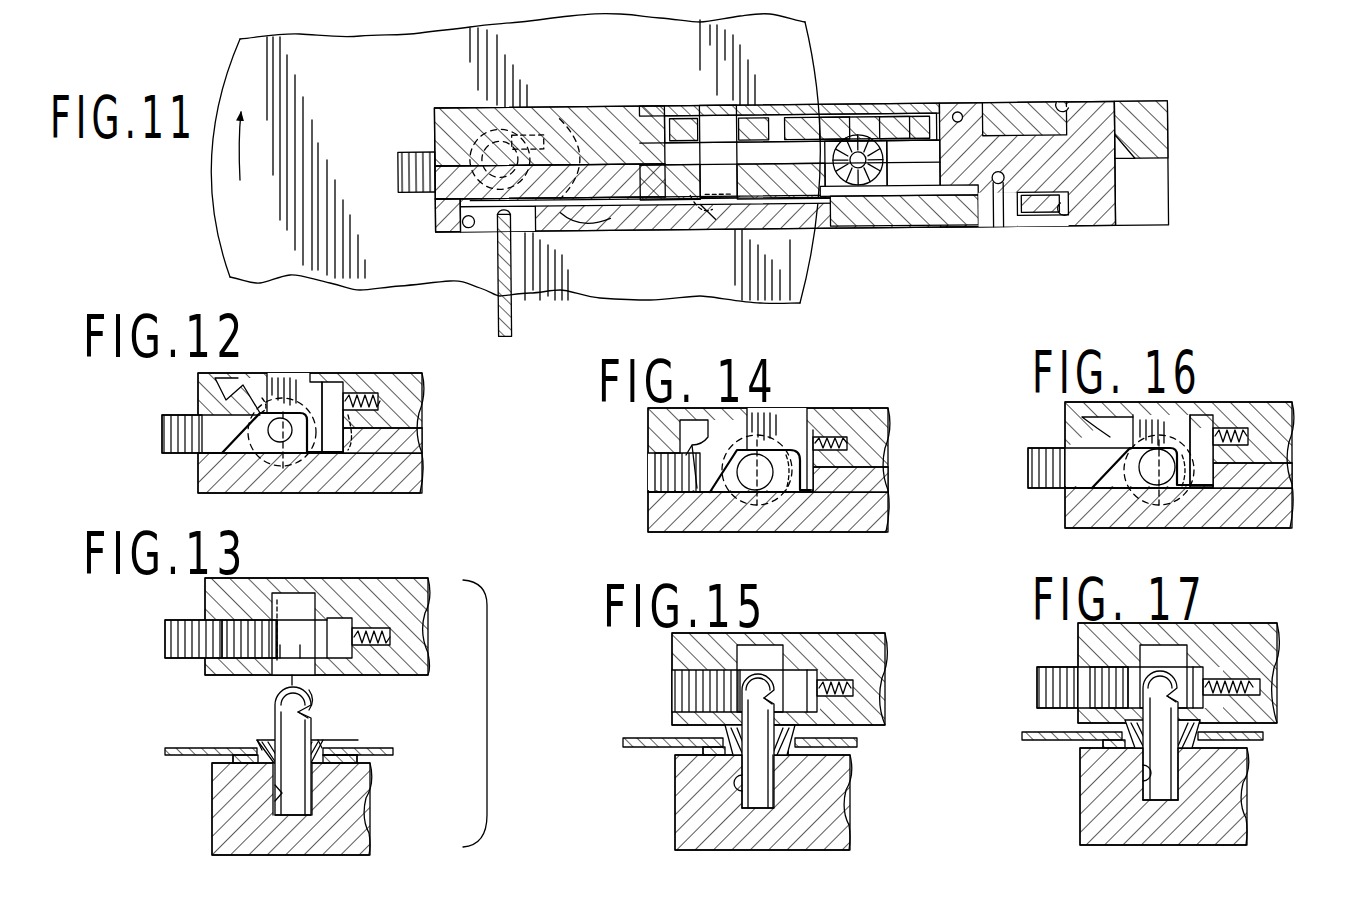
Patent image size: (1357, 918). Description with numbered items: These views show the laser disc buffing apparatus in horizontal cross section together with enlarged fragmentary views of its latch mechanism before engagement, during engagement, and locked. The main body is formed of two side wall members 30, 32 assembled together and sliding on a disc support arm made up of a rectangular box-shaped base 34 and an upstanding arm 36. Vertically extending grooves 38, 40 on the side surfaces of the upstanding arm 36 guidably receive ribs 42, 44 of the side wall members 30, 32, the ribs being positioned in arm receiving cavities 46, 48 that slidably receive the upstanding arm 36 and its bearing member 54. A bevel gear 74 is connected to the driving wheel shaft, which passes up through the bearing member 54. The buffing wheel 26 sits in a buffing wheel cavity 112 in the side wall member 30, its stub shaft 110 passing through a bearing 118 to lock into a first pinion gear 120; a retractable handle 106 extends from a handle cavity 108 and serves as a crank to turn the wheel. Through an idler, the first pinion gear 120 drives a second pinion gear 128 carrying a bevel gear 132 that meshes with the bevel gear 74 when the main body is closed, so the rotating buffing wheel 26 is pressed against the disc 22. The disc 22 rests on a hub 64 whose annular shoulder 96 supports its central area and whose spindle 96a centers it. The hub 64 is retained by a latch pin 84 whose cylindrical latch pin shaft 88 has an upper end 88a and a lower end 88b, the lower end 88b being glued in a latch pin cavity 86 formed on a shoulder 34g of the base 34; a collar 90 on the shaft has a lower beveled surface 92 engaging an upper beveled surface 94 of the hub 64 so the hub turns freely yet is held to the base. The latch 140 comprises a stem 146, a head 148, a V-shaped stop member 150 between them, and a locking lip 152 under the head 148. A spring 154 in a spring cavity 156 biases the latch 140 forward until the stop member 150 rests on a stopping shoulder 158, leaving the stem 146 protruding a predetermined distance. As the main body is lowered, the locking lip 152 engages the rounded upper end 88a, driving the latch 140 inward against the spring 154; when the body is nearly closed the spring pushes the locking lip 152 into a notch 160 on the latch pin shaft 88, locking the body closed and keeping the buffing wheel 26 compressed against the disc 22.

In FIG. 11, the laser disc 22 is at (236, 48).
In FIG. 13, the laser disc 22 is at (395, 749).
In FIG. 15, the laser disc 22 is at (857, 742).
In FIG. 17, the laser disc 22 is at (1263, 736).
In FIG. 11, the buffing wheel 26 is at (953, 233).
In FIG. 11, the side wall member 30 is at (626, 108).
In FIG. 12, the side wall member 30 is at (198, 476).
In FIG. 14, the side wall member 30 is at (648, 522).
In FIG. 16, the side wall member 30 is at (1068, 520).
In FIG. 11, the side wall member 32 is at (1170, 117).
In FIG. 12, the side wall member 32 is at (198, 387).
In FIG. 14, the side wall member 32 is at (648, 418).
In FIG. 16, the side wall member 32 is at (1065, 413).
In FIG. 13, the base 34 is at (355, 833).
In FIG. 15, the base 34 is at (847, 823).
In FIG. 17, the base 34 is at (1240, 823).
In FIG. 13, the shoulder 34g is at (235, 763).
In FIG. 15, the shoulder 34g is at (703, 750).
In FIG. 17, the shoulder 34g is at (1103, 747).
In FIG. 11, the upstanding arm 36 is at (1100, 107).
In FIG. 11, the groove 38 is at (1064, 218).
In FIG. 11, the groove 40 is at (1060, 110).
In FIG. 11, the rib 42 is at (1035, 213).
In FIG. 11, the rib 44 is at (1020, 109).
In FIG. 11, the arm receiving cavity 46 is at (998, 190).
In FIG. 11, the arm receiving cavity 48 is at (963, 117).
In FIG. 11, the bearing member 54 is at (905, 176).
In FIG. 13, the hub 64 is at (231, 774).
In FIG. 15, the hub 64 is at (717, 758).
In FIG. 17, the hub 64 is at (1110, 755).
In FIG. 11, the bevel gear 74 is at (867, 186).
In FIG. 13, the latch pin 84 is at (272, 710).
In FIG. 15, the latch pin 84 is at (727, 733).
In FIG. 17, the latch pin 84 is at (1133, 723).
In FIG. 13, the latch pin cavity 86 is at (280, 793).
In FIG. 15, the latch pin cavity 86 is at (745, 783).
In FIG. 17, the latch pin cavity 86 is at (1152, 772).
In FIG. 13, the latch pin shaft 88 is at (312, 787).
In FIG. 15, the latch pin shaft 88 is at (780, 787).
In FIG. 17, the latch pin shaft 88 is at (1187, 788).
In FIG. 12, the upper end 88a is at (277, 443).
In FIG. 13, the upper end 88a is at (287, 687).
In FIG. 14, the upper end 88a is at (750, 490).
In FIG. 15, the upper end 88a is at (768, 680).
In FIG. 16, the upper end 88a is at (1152, 485).
In FIG. 17, the upper end 88a is at (1167, 697).
In FIG. 13, the lower end 88b is at (240, 840).
In FIG. 15, the lower end 88b is at (760, 807).
In FIG. 17, the lower end 88b is at (1173, 800).
In FIG. 13, the collar 90 is at (340, 742).
In FIG. 15, the collar 90 is at (790, 722).
In FIG. 17, the collar 90 is at (1200, 710).
In FIG. 13, the lower beveled surface 92 is at (260, 746).
In FIG. 13, the upper beveled surface 94 is at (322, 743).
In FIG. 13, the annular shoulder 96 is at (360, 745).
In FIG. 13, the spindle 96a is at (367, 747).
In FIG. 15, the spindle 96a is at (820, 727).
In FIG. 17, the spindle 96a is at (1210, 728).
In FIG. 11, the retractable handle 106 is at (512, 323).
In FIG. 11, the handle cavity 108 is at (605, 235).
In FIG. 11, the stub shaft 110 is at (745, 218).
In FIG. 11, the buffing wheel cavity 112 is at (470, 232).
In FIG. 11, the bearing 118 is at (700, 210).
In FIG. 11, the first pinion gear 120 is at (686, 120).
In FIG. 11, the second pinion gear 128 is at (910, 120).
In FIG. 11, the bevel gear 132 is at (850, 121).
In FIG. 11, the latch 140 is at (398, 170).
In FIG. 12, the latch 140 is at (273, 385).
In FIG. 13, the latch 140 is at (290, 627).
In FIG. 14, the latch 140 is at (770, 420).
In FIG. 15, the latch 140 is at (790, 670).
In FIG. 16, the latch 140 is at (1180, 418).
In FIG. 17, the latch 140 is at (1177, 670).
In FIG. 12, the stem 146 is at (162, 435).
In FIG. 13, the stem 146 is at (167, 640).
In FIG. 14, the stem 146 is at (648, 478).
In FIG. 15, the stem 146 is at (672, 690).
In FIG. 16, the stem 146 is at (1028, 465).
In FIG. 17, the stem 146 is at (1037, 687).
In FIG. 12, the head 148 is at (323, 390).
In FIG. 13, the head 148 is at (320, 623).
In FIG. 14, the head 148 is at (808, 427).
In FIG. 15, the head 148 is at (807, 678).
In FIG. 16, the head 148 is at (1217, 472).
In FIG. 17, the head 148 is at (1207, 675).
In FIG. 12, the V-shaped stop member 150 is at (214, 392).
In FIG. 14, the V-shaped stop member 150 is at (657, 507).
In FIG. 12, the locking lip 152 is at (363, 417).
In FIG. 13, the locking lip 152 is at (277, 627).
In FIG. 14, the locking lip 152 is at (790, 487).
In FIG. 15, the locking lip 152 is at (830, 690).
In FIG. 16, the locking lip 152 is at (1197, 473).
In FIG. 17, the locking lip 152 is at (1260, 688).
In FIG. 12, the spring 154 is at (378, 405).
In FIG. 13, the spring 154 is at (390, 637).
In FIG. 14, the spring 154 is at (847, 441).
In FIG. 16, the spring 154 is at (1248, 436).
In FIG. 12, the spring cavity 156 is at (362, 420).
In FIG. 12, the stopping shoulder 158 is at (257, 400).
In FIG. 14, the stopping shoulder 158 is at (683, 462).
In FIG. 13, the notch 160 is at (312, 708).
In FIG. 15, the notch 160 is at (760, 700).
In FIG. 17, the notch 160 is at (1147, 700).